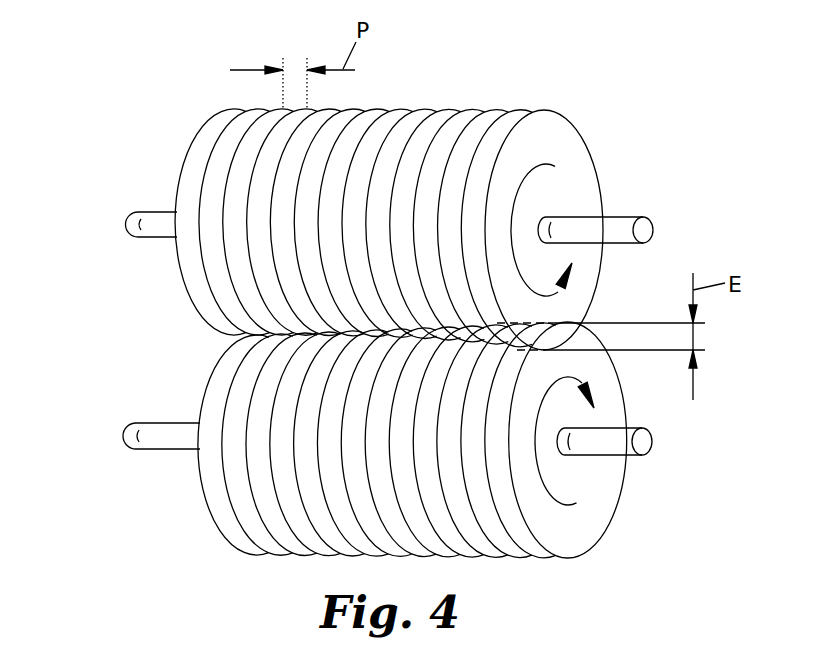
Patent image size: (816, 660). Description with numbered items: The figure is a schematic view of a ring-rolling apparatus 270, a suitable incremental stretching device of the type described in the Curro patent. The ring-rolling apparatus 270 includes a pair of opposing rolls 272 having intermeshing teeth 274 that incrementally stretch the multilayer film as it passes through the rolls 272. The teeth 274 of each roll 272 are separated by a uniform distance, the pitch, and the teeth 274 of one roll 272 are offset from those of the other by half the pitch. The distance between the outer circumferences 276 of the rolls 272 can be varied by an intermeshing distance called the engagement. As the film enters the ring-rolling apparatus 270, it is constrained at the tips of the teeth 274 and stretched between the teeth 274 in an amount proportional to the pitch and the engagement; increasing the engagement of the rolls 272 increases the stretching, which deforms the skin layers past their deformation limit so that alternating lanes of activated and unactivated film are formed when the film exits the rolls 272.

The ring-rolling apparatus 270 is at (160, 109).
The opposing rolls 272 is at (170, 375).
The intermeshing teeth 274 is at (578, 103).
The outer circumferences 276 is at (575, 314).